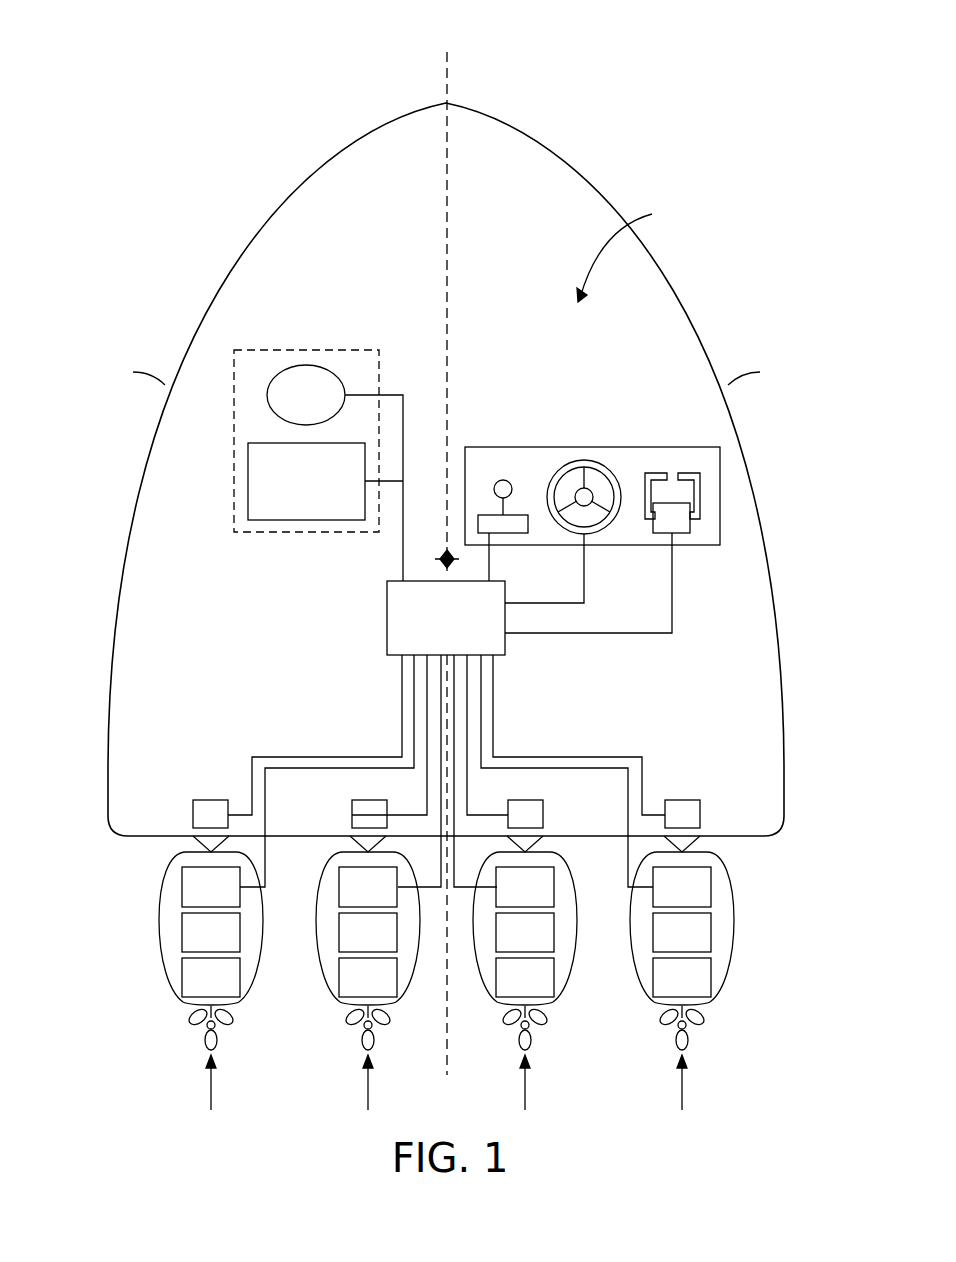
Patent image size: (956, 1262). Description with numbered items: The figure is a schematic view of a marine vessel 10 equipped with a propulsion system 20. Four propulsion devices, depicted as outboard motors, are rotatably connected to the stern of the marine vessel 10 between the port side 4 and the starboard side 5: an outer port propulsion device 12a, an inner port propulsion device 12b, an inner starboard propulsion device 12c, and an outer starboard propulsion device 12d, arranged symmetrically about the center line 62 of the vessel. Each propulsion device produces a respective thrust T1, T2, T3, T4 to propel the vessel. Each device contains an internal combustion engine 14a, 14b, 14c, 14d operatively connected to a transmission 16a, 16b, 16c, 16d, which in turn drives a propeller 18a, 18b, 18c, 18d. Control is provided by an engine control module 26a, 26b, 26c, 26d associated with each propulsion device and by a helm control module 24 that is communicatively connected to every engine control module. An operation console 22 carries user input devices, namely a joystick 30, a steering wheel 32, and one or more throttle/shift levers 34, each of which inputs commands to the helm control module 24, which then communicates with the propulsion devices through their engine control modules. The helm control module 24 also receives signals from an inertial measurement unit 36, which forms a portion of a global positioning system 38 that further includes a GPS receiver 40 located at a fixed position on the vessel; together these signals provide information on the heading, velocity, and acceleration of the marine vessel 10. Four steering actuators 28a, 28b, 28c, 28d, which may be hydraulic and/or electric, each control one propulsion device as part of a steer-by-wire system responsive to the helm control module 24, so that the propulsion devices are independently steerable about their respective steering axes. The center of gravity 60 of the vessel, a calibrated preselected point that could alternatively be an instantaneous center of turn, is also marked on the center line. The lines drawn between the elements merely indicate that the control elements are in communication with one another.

The marine vessel 10 is at (528, 137).
The center line 62 is at (452, 67).
The propulsion system 20 is at (630, 249).
The port side 4 is at (138, 371).
The starboard side 5 is at (755, 371).
The global positioning system 38 is at (304, 350).
The GPS receiver 40 is at (267, 394).
The inertial measurement unit 36 is at (248, 482).
The operation console 22 is at (555, 447).
The joystick 30 is at (505, 478).
The steering wheel 32 is at (595, 463).
The throttle/shift lever 34 is at (655, 472).
The center of gravity 60 is at (430, 556).
The helm control module 24 is at (387, 617).
The steering actuator 28a is at (193, 812).
The steering actuator 28b is at (352, 812).
The steering actuator 28c is at (543, 812).
The steering actuator 28d is at (700, 812).
The engine control module 26a is at (181, 887).
The engine control module 26b is at (338, 887).
The engine control module 26c is at (555, 887).
The engine control module 26d is at (712, 887).
The internal combustion engine 14a is at (181, 930).
The internal combustion engine 14b is at (338, 930).
The internal combustion engine 14c is at (555, 930).
The internal combustion engine 14d is at (712, 930).
The transmission 16a is at (181, 972).
The transmission 16b is at (338, 972).
The transmission 16c is at (555, 972).
The transmission 16d is at (712, 972).
The outer port propulsion device 12a is at (172, 985).
The inner port propulsion device 12b is at (330, 985).
The inner starboard propulsion device 12c is at (563, 985).
The outer starboard propulsion device 12d is at (721, 985).
The propeller 18a is at (198, 1022).
The propeller 18b is at (355, 1022).
The propeller 18c is at (538, 1022).
The propeller 18d is at (695, 1022).
The thrust T1 is at (207, 1090).
The thrust T2 is at (364, 1090).
The thrust T3 is at (530, 1090).
The thrust T4 is at (686, 1090).